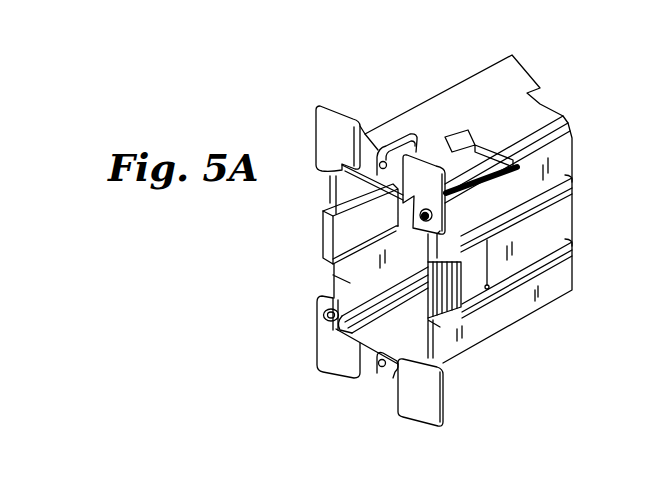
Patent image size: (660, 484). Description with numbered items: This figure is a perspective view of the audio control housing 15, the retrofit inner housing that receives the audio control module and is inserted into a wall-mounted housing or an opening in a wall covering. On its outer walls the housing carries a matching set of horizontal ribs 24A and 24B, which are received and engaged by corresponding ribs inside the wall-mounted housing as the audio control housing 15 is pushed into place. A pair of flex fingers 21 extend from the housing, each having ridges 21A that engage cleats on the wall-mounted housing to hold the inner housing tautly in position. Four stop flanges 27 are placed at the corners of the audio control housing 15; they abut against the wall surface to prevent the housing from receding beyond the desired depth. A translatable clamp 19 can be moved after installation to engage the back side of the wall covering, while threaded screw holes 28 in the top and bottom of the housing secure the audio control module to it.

The audio control housing 15 is at (515, 323).
The translatable clamp 19 is at (470, 132).
The flex fingers 21 is at (322, 231).
The ridges 21A is at (460, 306).
The horizontal rib 24A is at (573, 198).
The horizontal rib 24B is at (568, 262).
The stop flanges 27 is at (327, 106).
The threaded screw holes 28 is at (379, 153).